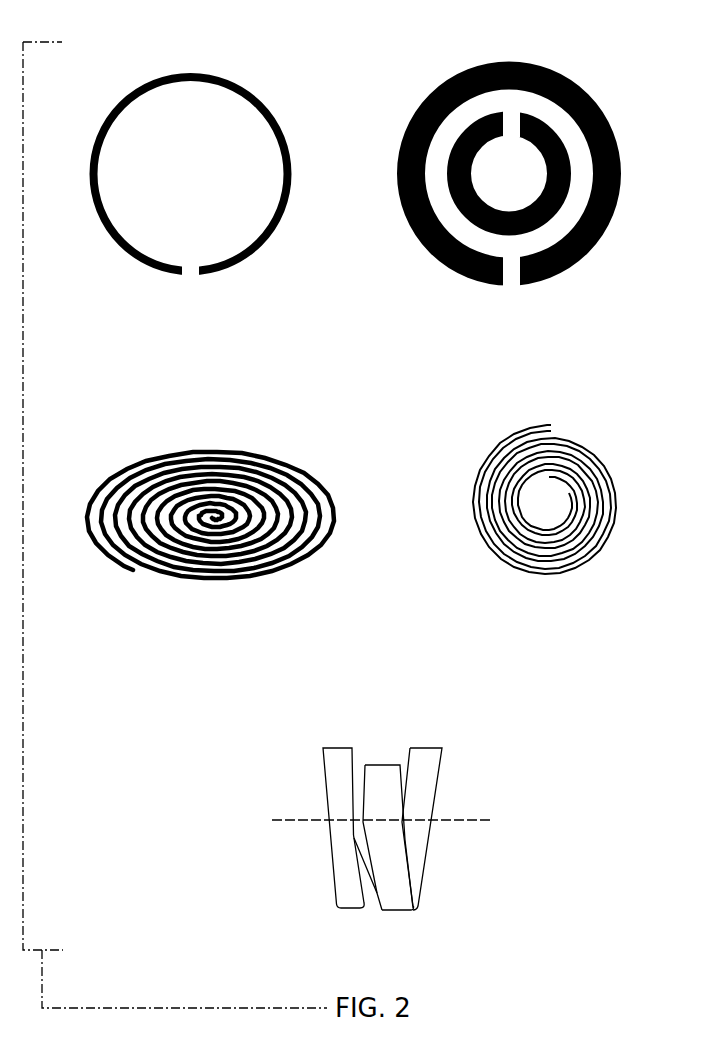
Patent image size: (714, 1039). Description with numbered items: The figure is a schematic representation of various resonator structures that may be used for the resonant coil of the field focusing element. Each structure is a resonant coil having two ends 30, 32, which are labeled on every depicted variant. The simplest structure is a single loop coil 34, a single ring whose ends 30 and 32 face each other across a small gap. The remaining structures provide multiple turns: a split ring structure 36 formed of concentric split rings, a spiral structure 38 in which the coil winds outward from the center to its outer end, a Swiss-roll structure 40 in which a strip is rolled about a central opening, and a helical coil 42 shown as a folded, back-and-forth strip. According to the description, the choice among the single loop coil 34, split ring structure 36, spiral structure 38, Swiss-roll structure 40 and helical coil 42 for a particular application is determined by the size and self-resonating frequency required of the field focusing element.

The end of resonant coil 30 is at (183, 275).
The end of resonant coil 32 is at (199, 264).
The single loop coil 34 is at (241, 79).
The split ring structure 36 is at (585, 78).
The spiral structure 38 is at (312, 401).
The Swiss-roll structure 40 is at (620, 382).
The helical coil 42 is at (480, 680).